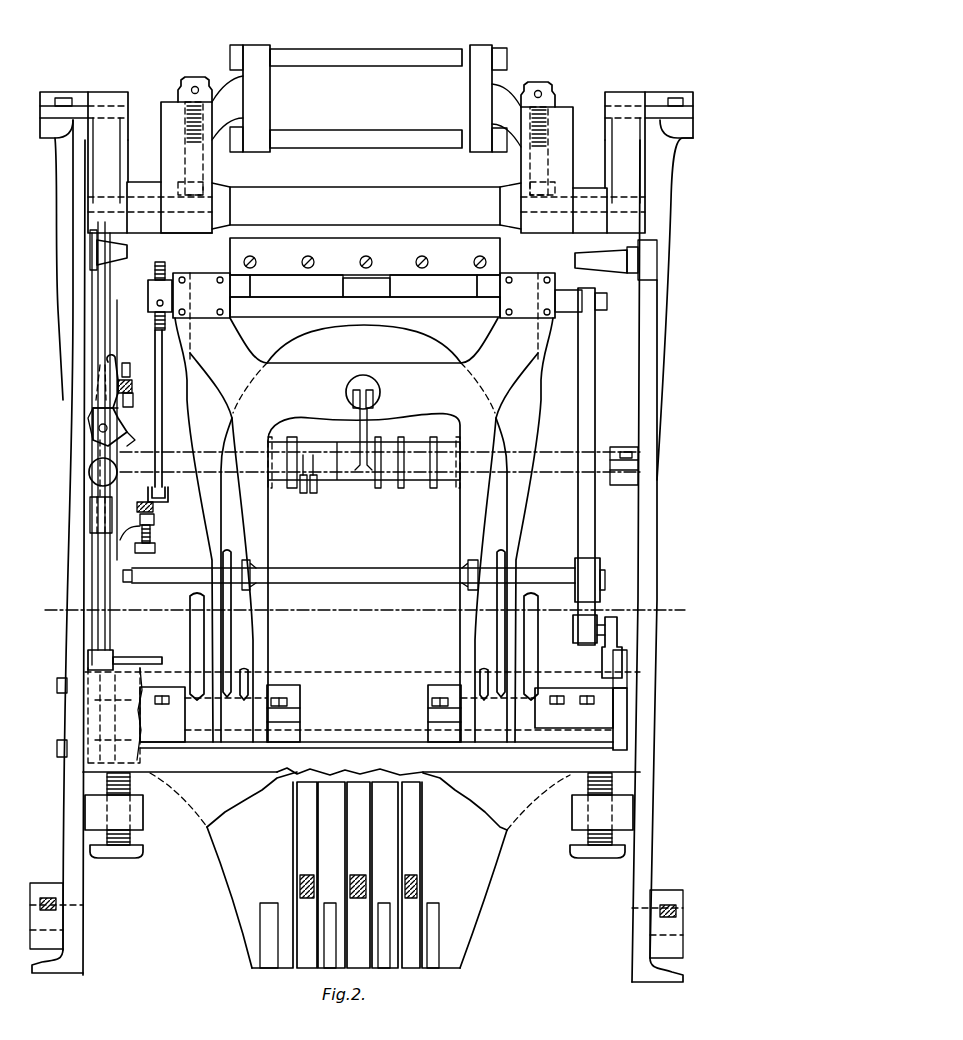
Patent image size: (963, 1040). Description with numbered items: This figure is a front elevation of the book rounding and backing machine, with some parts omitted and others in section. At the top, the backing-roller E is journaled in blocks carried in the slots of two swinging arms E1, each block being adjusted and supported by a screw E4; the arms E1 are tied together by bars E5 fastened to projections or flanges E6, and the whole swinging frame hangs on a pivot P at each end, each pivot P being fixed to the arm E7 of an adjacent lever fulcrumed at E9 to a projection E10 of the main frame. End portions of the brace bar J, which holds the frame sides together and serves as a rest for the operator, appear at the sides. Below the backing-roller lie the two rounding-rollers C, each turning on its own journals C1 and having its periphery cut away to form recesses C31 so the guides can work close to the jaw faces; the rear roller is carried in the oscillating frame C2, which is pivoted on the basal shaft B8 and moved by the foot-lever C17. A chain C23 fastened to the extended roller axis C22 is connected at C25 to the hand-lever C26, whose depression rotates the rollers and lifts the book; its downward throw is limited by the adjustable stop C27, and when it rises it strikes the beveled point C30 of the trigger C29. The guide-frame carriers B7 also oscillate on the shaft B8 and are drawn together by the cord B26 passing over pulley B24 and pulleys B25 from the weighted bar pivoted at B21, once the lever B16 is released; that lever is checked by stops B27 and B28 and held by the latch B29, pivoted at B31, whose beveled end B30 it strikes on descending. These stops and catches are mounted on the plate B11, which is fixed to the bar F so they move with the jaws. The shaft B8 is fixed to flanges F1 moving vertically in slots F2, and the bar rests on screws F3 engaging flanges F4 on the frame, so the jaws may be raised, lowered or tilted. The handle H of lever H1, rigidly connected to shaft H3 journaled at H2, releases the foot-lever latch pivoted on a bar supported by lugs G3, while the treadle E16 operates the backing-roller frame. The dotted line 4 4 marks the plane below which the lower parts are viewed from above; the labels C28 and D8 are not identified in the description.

The projection of the frame E10 is at (75, 160).
The fulcrum E9 is at (127, 100).
The arm of lever E7 is at (366, 162).
The pivot P is at (367, 207).
The swinging arm E1 is at (367, 154).
The screw E4 is at (204, 85).
The projection or flange E6 is at (252, 101).
The bar E5 is at (380, 58).
The backing-roller E is at (366, 206).
The handle H is at (108, 240).
The bar J is at (118, 262).
The rounding-roller C is at (406, 280).
The recess C31 is at (315, 300).
The journal C1 is at (364, 316).
The chain C23 is at (160, 268).
The axis of roller C22 is at (148, 296).
The oscillating frame C2 is at (352, 422).
The pulley cord or band B26 is at (595, 389).
The supporting plate B11 is at (108, 360).
The stop B27 is at (100, 348).
The beveled end B30 is at (123, 368).
The lever B16 is at (139, 381).
The latch B29 is at (110, 395).
The stop B28 is at (125, 403).
The pivot B31 is at (95, 420).
The beveled point C30 is at (139, 437).
The trigger C29 is at (105, 462).
The connection point C25 is at (170, 491).
The lever C26 is at (140, 503).
The stop C27 is at (154, 519).
The screw C28 is at (150, 535).
The lever H1 is at (102, 588).
The dotted line 4 is at (362, 611).
The pulley B25 is at (590, 575).
The pulley B24 is at (580, 628).
The pivot B21 is at (602, 660).
The slot F2 is at (625, 662).
The guide-frame carrier B7 is at (232, 632).
The journal H2 is at (110, 660).
The shaft H3 is at (148, 660).
The basal shaft B8 is at (362, 710).
The flange F1 is at (630, 712).
The bar F is at (361, 860).
The flange F4 is at (133, 815).
The screw F3 is at (125, 838).
The lug G3 is at (268, 903).
The foot-lever C17 is at (307, 875).
The bar D8 is at (358, 875).
The foot-lever or treadle E16 is at (410, 875).